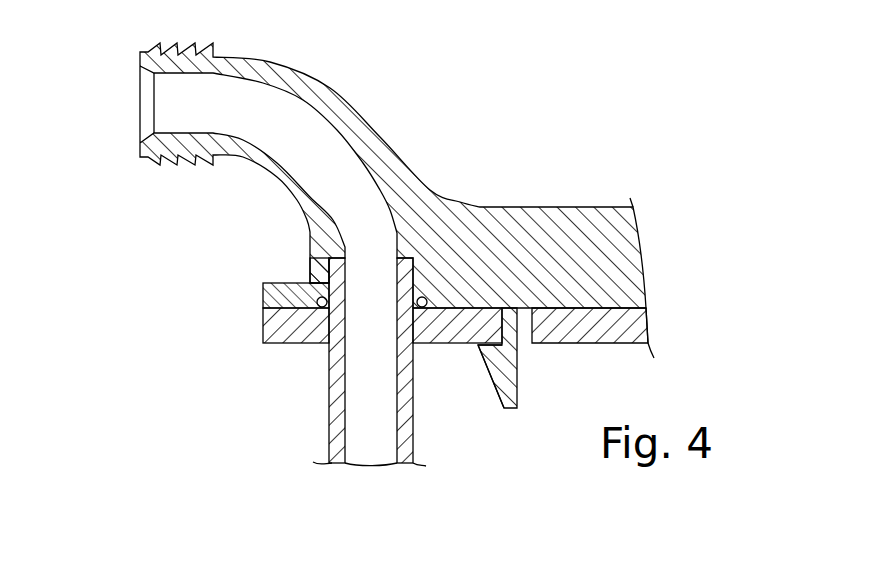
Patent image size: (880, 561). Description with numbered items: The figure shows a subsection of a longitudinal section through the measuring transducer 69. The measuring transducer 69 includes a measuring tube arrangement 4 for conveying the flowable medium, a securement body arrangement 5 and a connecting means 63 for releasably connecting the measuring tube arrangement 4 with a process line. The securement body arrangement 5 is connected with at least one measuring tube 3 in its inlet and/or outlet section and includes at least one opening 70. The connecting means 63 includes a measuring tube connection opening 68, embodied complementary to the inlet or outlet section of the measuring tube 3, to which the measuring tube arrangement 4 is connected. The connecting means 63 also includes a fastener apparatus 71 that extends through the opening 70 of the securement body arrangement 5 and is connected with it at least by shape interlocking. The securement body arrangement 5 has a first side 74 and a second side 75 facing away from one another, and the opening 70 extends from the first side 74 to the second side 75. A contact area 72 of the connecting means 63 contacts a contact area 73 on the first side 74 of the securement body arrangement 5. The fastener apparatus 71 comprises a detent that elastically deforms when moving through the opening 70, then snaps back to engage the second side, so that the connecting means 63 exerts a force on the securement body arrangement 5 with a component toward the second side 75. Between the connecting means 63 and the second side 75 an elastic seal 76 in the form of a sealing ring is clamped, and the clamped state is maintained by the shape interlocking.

The measuring tube 3 is at (333, 428).
The measuring tube arrangement 4 is at (300, 385).
The securement body arrangement 5 is at (302, 325).
The connecting means 63 is at (479, 230).
The measuring tube connection opening 68 is at (314, 258).
The measuring transducer 69 is at (613, 162).
The opening 70 is at (523, 327).
The fastener apparatus 71 is at (498, 367).
The contact area 72 is at (482, 345).
The contact area 73 is at (494, 375).
The first side 74 is at (623, 339).
The second side 75 is at (563, 310).
The elastic seal 76 is at (420, 297).